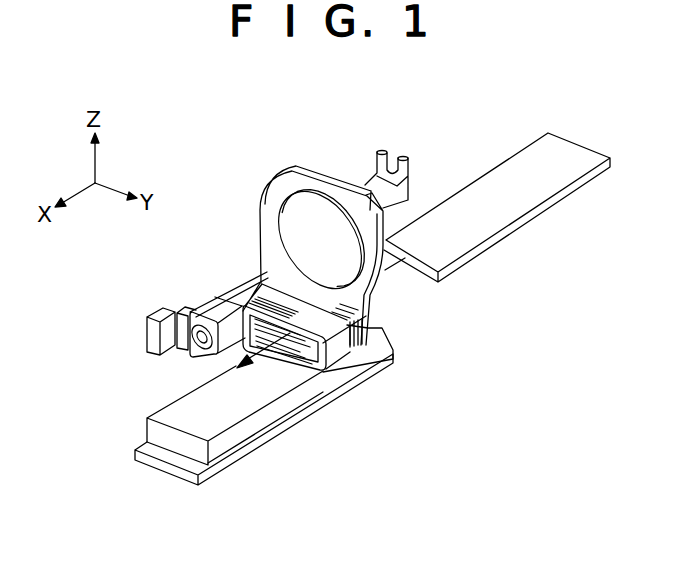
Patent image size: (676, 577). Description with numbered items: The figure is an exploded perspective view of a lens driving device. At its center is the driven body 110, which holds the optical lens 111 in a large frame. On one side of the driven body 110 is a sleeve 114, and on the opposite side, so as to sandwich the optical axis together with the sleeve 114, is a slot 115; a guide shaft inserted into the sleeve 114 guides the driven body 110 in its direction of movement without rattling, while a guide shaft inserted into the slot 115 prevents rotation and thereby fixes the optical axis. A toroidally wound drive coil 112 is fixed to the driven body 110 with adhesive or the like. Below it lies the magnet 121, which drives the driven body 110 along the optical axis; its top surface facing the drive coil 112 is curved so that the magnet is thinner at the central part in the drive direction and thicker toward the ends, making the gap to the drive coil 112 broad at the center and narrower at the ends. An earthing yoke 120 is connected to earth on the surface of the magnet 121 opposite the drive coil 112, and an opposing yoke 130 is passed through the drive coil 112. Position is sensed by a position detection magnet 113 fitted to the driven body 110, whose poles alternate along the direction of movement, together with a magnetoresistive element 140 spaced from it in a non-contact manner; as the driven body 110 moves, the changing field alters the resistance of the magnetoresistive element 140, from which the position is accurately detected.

The driven body 110 is at (305, 187).
The optical lens 111 is at (292, 227).
The drive coil 112 is at (337, 358).
The position detection magnet 113 is at (232, 290).
The sleeve 114 is at (208, 354).
The slot 115 is at (377, 164).
The earthing yoke 120 is at (158, 467).
The magnet 121 is at (157, 436).
The opposing yoke 130 is at (463, 210).
The magnetoresistive element 140 is at (158, 303).